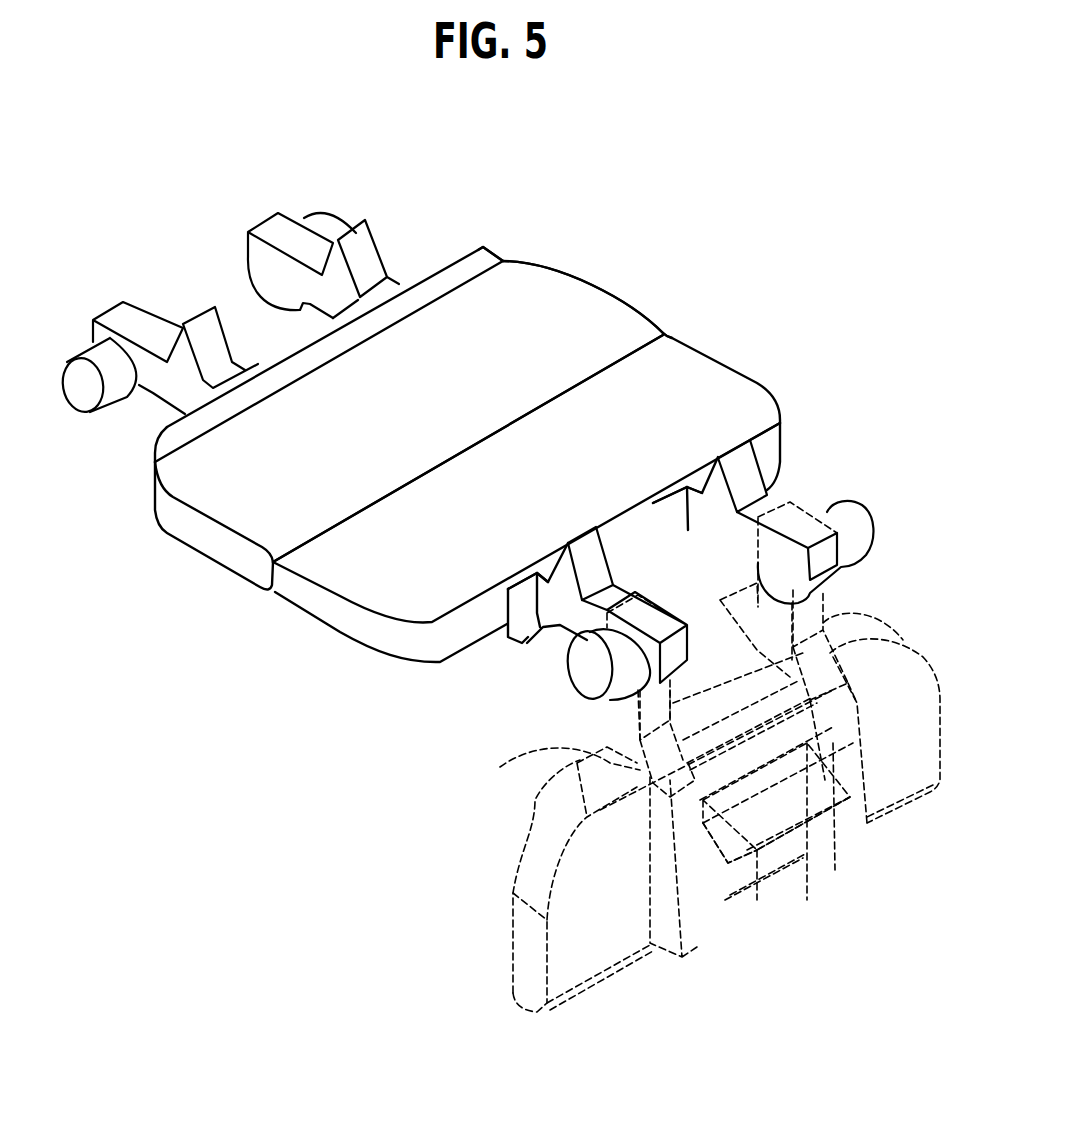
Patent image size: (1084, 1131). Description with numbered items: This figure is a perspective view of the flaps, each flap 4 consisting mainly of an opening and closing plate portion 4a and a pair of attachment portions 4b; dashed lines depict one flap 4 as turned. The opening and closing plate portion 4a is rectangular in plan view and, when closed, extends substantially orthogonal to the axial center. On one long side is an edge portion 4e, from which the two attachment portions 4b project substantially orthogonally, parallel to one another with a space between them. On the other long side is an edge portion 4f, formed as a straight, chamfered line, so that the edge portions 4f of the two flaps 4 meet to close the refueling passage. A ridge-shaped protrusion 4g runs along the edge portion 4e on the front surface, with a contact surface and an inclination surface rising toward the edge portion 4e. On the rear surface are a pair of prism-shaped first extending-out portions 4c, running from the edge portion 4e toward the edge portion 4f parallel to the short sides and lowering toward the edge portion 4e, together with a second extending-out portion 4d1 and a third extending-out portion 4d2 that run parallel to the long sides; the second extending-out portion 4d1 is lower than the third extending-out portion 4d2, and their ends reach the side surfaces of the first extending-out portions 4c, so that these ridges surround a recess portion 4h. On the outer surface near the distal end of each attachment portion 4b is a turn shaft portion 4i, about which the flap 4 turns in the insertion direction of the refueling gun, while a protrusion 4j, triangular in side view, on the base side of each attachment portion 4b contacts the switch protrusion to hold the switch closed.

The flap 4 is at (163, 557).
The opening and closing plate portion 4a is at (562, 300).
The attachment portion 4b is at (260, 217).
The first extending-out portion 4c is at (865, 860).
The second extending-out portion 4d1 is at (757, 870).
The third extending-out portion 4d2 is at (803, 863).
The edge portion 4e is at (653, 503).
The edge portion 4f is at (603, 367).
The protrusion 4g is at (442, 263).
The recess portion 4h is at (785, 767).
The turn shaft portion 4i is at (330, 210).
The protrusion 4j is at (203, 347).